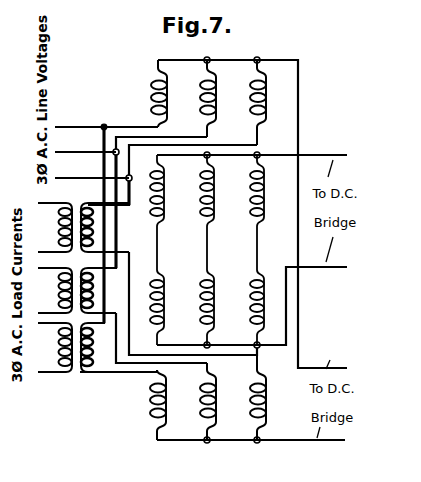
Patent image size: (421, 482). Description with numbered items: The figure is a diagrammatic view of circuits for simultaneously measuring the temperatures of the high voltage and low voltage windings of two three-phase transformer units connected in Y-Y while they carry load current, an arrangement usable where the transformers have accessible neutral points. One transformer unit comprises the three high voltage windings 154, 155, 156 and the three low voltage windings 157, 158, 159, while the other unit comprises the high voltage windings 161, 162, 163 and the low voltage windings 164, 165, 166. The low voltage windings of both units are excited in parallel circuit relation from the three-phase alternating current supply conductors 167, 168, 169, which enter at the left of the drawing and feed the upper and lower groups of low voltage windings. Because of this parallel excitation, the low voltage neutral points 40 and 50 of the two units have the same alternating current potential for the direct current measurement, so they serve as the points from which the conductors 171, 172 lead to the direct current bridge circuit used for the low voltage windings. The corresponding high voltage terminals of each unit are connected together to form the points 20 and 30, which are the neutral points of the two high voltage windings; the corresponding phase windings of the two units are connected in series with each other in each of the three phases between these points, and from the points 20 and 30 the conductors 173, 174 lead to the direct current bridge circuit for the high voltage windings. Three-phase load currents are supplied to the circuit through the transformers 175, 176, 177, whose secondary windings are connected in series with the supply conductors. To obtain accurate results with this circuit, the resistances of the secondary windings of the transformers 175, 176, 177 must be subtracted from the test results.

The neutral point 20 is at (205, 157).
The neutral point 30 is at (205, 344).
The neutral point 40 is at (210, 58).
The neutral point 50 is at (207, 441).
The high voltage winding 154 is at (162, 210).
The high voltage winding 155 is at (212, 210).
The high voltage winding 156 is at (262, 210).
The low voltage winding 157 is at (150, 94).
The low voltage winding 158 is at (199, 92).
The low voltage winding 159 is at (244, 91).
The high voltage winding 161 is at (164, 290).
The high voltage winding 162 is at (215, 290).
The high voltage winding 163 is at (265, 287).
The low voltage winding 164 is at (148, 402).
The low voltage winding 165 is at (198, 407).
The low voltage winding 166 is at (248, 407).
The alternating current supply conductor 167 is at (91, 127).
The alternating current supply conductor 168 is at (87, 152).
The alternating current supply conductor 169 is at (91, 178).
The conductor 171 is at (300, 330).
The conductor 172 is at (289, 444).
The conductor 173 is at (321, 156).
The conductor 174 is at (311, 270).
The transformer 175 is at (62, 233).
The transformer 176 is at (62, 295).
The transformer 177 is at (62, 353).